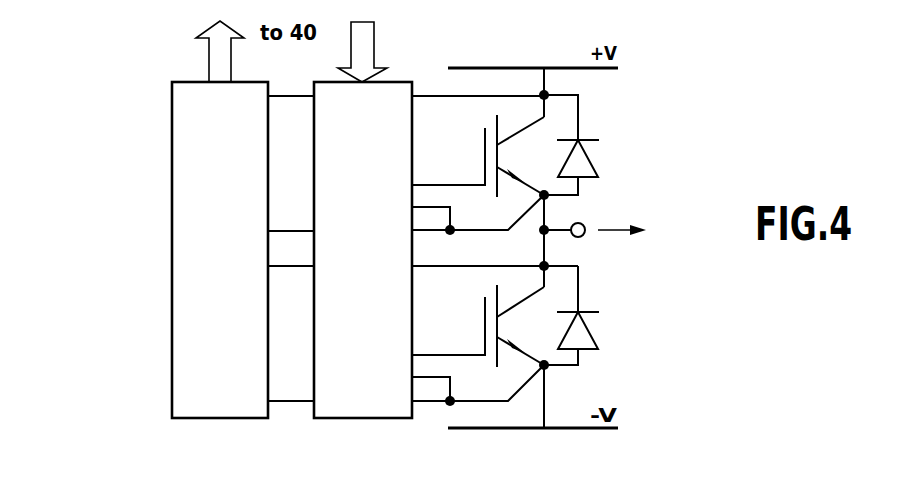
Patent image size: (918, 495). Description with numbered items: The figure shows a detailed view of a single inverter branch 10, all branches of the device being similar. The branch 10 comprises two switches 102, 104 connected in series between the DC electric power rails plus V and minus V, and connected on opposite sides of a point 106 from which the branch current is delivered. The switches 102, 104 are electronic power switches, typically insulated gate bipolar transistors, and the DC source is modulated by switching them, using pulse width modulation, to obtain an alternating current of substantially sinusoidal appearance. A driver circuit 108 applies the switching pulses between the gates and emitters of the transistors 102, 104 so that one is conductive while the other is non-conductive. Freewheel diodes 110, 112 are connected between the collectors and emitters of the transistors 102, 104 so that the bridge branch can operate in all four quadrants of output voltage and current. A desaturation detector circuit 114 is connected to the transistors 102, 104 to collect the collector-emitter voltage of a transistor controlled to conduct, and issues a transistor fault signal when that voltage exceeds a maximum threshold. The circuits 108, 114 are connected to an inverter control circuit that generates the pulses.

The inverter branch 10 is at (350, 248).
The switch 102 is at (522, 118).
The switch 104 is at (519, 364).
The point 106 is at (582, 223).
The driver circuit 108 is at (370, 261).
The freewheel diode 110 is at (586, 158).
The freewheel diode 112 is at (588, 336).
The desaturation detector circuit 114 is at (227, 261).